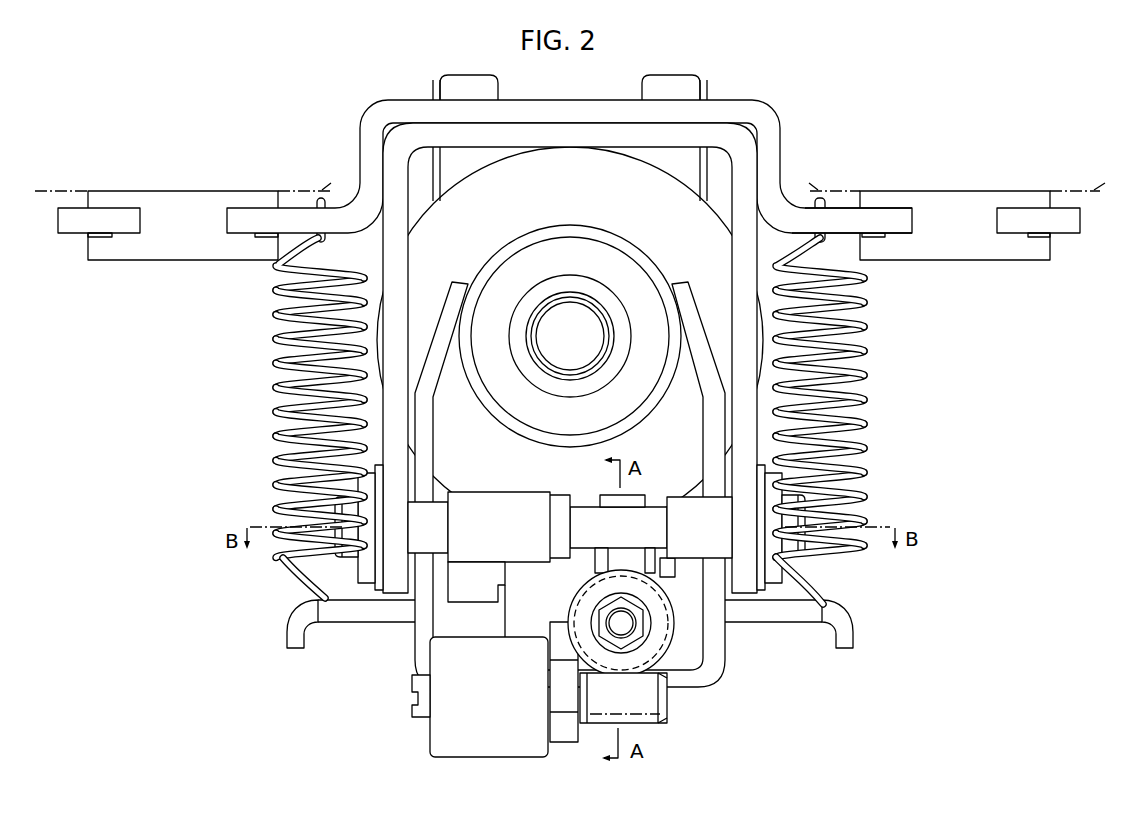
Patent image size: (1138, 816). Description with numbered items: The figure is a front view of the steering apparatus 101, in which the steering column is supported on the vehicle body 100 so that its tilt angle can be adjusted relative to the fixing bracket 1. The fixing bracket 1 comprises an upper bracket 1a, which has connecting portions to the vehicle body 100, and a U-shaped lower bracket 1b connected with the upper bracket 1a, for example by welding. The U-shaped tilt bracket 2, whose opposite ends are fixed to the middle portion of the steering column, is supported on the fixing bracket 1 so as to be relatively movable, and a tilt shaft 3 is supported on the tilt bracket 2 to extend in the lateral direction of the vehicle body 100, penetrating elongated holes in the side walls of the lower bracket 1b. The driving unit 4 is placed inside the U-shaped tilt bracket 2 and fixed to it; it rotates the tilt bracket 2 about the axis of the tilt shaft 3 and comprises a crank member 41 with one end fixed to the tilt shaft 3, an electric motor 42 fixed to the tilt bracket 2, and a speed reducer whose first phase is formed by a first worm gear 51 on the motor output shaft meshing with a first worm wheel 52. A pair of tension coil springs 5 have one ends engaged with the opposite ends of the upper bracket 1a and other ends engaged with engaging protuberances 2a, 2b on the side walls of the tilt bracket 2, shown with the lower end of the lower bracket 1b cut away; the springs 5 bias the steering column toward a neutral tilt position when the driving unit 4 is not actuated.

The fixing bracket 1 is at (765, 102).
The upper bracket 1a is at (770, 160).
The lower bracket 1b is at (742, 250).
The tilt bracket 2 is at (724, 676).
The engaging protuberance 2a is at (290, 631).
The engaging protuberance 2b is at (843, 632).
The tilt shaft 3 is at (712, 547).
The driving unit 4 is at (405, 684).
The tension coil spring 5 is at (275, 385).
The crank member 41 is at (473, 570).
The electric motor 42 is at (453, 732).
The first worm gear 51 is at (647, 697).
The first worm wheel 52 is at (657, 637).
The vehicle body 100 is at (60, 191).
The steering apparatus 101 is at (890, 405).